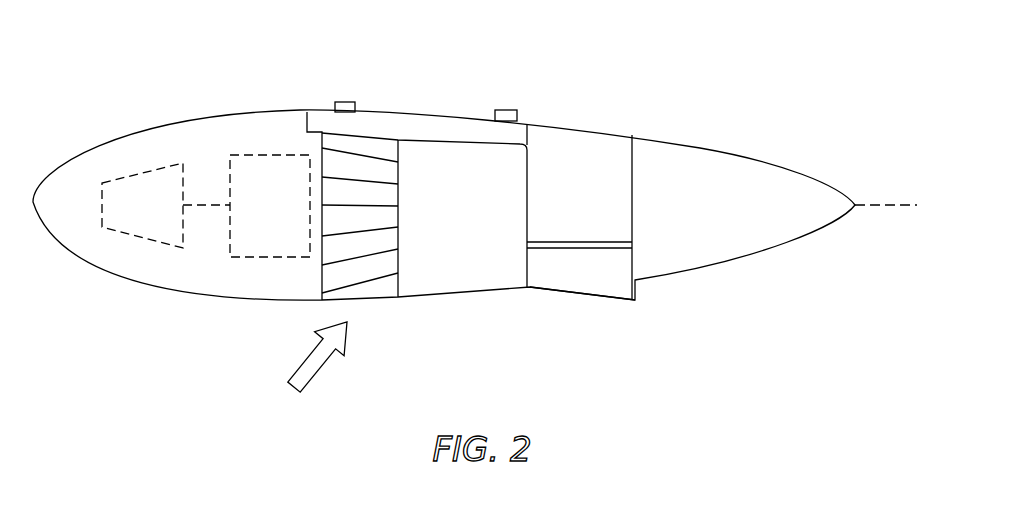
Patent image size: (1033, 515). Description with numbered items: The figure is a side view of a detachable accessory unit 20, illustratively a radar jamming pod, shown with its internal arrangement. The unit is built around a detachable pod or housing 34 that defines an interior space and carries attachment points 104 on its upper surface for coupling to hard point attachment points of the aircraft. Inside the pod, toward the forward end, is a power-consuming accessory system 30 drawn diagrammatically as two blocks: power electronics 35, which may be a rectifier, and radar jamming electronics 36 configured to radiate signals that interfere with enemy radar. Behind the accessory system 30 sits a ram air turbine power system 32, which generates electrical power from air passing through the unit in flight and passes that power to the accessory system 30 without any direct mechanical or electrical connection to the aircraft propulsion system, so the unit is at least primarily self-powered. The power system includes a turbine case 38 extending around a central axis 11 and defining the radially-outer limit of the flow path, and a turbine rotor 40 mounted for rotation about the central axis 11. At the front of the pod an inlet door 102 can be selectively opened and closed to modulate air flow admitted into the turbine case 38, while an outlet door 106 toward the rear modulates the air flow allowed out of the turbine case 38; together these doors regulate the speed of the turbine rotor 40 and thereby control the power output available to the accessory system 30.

The detachable accessory unit 20 is at (130, 113).
The power-consuming accessory system 30 is at (208, 185).
The ram air turbine power system 32 is at (420, 168).
The detachable pod or housing 34 is at (777, 155).
The power electronics 35 is at (258, 258).
The radar jamming electronics 36 is at (127, 234).
The turbine case 38 is at (482, 263).
The turbine rotor 40 is at (485, 207).
The inlet door 102 is at (362, 293).
The attachment points 104 is at (345, 102).
The outlet door 106 is at (605, 267).
The central axis 11 is at (885, 207).